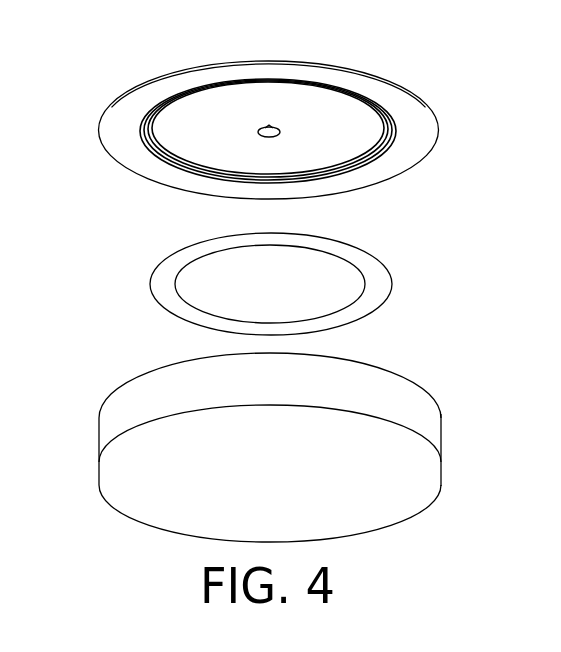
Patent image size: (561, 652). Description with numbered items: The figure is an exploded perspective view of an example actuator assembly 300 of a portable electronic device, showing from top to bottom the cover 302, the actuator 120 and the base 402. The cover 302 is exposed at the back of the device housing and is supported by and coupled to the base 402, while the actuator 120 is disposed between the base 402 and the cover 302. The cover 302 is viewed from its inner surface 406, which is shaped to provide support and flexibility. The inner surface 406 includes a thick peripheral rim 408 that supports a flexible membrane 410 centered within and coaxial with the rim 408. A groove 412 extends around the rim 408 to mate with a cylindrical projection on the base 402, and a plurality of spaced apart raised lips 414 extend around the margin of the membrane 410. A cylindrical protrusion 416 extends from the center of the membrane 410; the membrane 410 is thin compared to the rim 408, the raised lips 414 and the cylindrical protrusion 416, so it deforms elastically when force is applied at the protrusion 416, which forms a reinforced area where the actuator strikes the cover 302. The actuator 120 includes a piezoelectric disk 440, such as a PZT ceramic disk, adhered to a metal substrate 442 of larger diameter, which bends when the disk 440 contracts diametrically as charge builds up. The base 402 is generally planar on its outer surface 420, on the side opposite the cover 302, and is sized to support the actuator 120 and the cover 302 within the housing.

The actuator assembly 300 is at (95, 542).
The cover 302 is at (415, 92).
The actuator 120 is at (375, 260).
The base 402 is at (412, 383).
The inner surface 406 is at (173, 123).
The peripheral rim 408 is at (237, 66).
The flexible membrane 410 is at (330, 112).
The groove 412 is at (140, 128).
The raised lips 414 is at (150, 153).
The cylindrical protrusion 416 is at (273, 126).
The outer surface 420 is at (408, 492).
The piezoelectric disk 440 is at (210, 268).
The metal substrate 442 is at (162, 283).